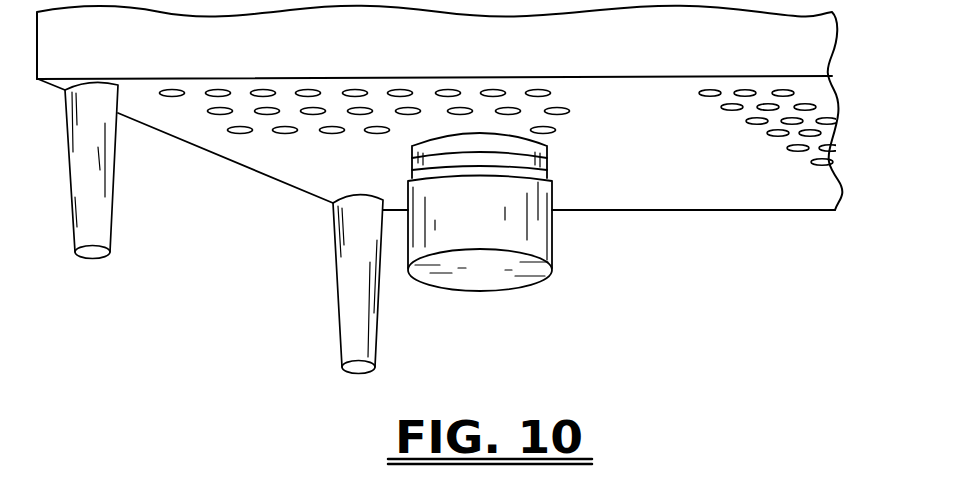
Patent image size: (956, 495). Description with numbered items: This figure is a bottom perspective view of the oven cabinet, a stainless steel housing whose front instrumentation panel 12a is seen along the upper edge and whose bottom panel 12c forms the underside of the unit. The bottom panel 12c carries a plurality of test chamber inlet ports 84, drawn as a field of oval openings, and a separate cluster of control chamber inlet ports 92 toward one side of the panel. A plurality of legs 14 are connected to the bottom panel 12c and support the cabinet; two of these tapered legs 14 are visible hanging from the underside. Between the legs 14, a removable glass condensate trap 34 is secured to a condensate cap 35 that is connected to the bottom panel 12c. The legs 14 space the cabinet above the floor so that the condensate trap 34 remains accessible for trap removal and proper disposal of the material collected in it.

The front instrumentation panel 12a is at (463, 50).
The bottom panel 12c is at (655, 144).
The legs 14 is at (112, 190).
The condensate trap 34 is at (553, 247).
The condensate cap 35 is at (548, 168).
The test chamber inlet ports 84 is at (323, 131).
The control chamber inlet ports 92 is at (768, 134).